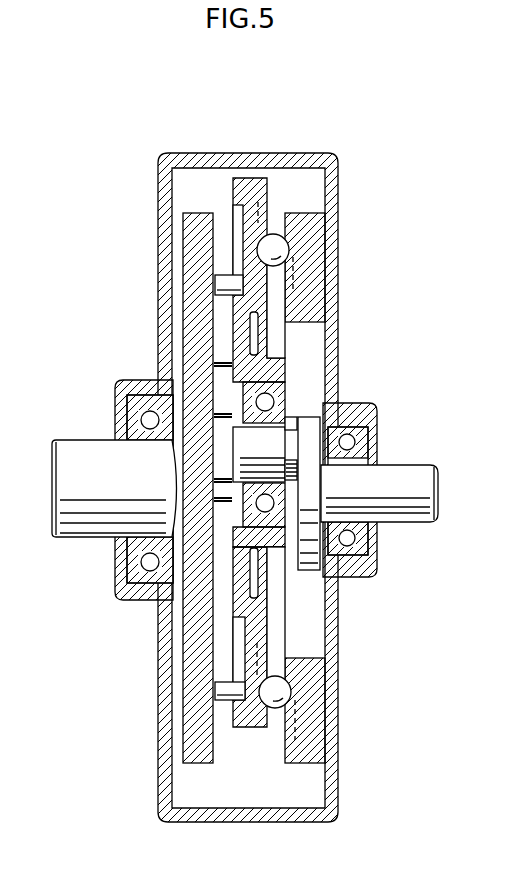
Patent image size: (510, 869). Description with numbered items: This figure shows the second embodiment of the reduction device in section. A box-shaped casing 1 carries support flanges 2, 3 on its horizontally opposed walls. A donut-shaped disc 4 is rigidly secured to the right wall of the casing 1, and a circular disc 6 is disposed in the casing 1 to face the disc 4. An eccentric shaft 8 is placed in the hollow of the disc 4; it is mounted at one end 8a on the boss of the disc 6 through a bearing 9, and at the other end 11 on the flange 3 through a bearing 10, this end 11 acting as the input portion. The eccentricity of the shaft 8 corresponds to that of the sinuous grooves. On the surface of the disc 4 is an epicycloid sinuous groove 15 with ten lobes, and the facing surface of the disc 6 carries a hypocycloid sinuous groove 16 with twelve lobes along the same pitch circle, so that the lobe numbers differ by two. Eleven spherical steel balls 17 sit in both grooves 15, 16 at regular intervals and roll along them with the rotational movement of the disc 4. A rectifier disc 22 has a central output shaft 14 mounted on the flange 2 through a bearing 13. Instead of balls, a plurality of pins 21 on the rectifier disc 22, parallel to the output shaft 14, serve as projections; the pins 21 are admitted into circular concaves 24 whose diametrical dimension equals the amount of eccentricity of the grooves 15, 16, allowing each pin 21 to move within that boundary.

The casing 1 is at (265, 441).
The support flange 2 is at (135, 380).
The support flange 3 is at (352, 404).
The donut-shaped disc 4 is at (340, 205).
The circular disc 6 is at (250, 177).
The eccentric shaft 8 is at (312, 575).
The one end of eccentric shaft 8a is at (260, 443).
The bearing 9 is at (285, 357).
The bearing 10 is at (340, 573).
The other end of eccentric shaft 11 is at (410, 477).
The bearing 13 is at (140, 600).
The output shaft 14 is at (68, 540).
The sinuous groove 15 is at (289, 250).
The sinuous groove 16 is at (287, 200).
The spherical balls 17 is at (312, 219).
The pins 21 is at (223, 284).
The rectifier disc 22 is at (183, 213).
The circular concaves 24 is at (232, 207).